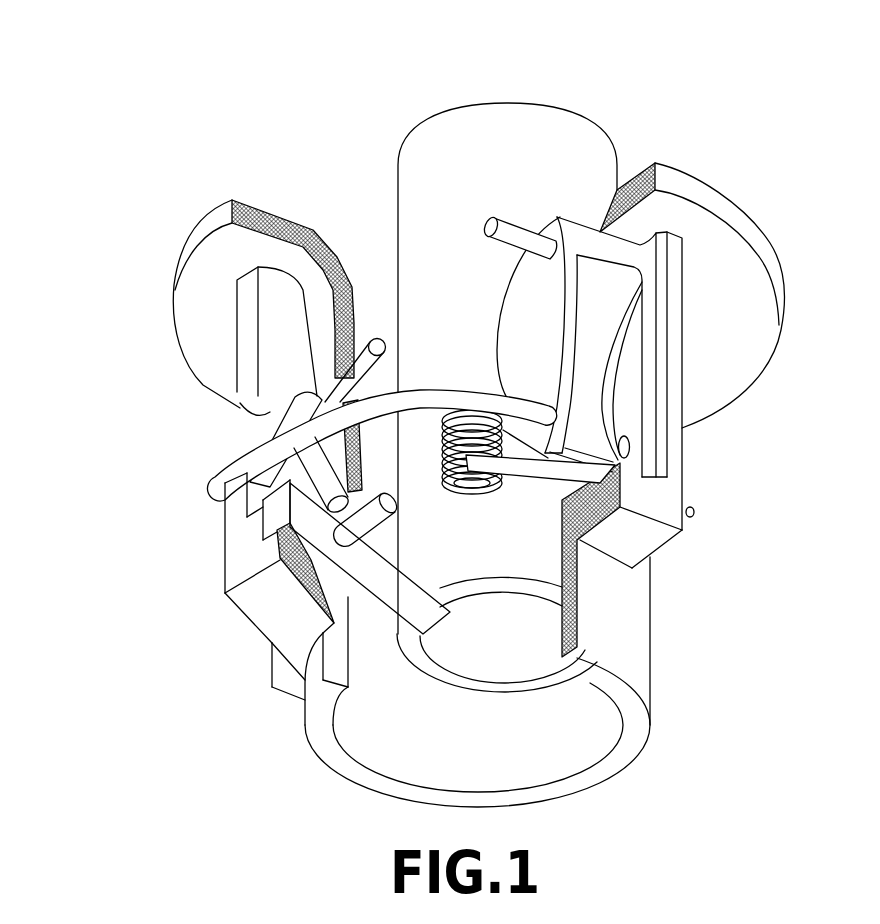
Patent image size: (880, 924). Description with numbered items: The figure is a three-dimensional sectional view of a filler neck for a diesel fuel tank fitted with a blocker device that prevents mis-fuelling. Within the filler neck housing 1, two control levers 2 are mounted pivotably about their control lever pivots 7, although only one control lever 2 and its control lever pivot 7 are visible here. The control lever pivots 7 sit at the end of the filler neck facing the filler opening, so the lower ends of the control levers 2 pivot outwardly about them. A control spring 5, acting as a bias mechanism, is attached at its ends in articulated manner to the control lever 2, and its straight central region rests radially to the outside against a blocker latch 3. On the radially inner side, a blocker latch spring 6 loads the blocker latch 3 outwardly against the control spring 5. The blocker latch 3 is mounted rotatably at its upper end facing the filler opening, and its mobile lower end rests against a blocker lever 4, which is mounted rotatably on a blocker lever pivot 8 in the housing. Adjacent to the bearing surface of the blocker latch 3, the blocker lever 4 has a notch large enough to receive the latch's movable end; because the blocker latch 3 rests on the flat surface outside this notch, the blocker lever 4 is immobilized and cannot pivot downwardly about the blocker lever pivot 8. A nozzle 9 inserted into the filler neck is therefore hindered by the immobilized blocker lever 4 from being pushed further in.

The filler neck housing 1 is at (193, 233).
The control lever 2 is at (670, 320).
The blocker latch 3 is at (210, 363).
The blocker lever 4 is at (390, 605).
The control spring 5 is at (295, 445).
The blocker latch spring 6 is at (481, 462).
The control lever pivot 7 is at (663, 153).
The blocker lever pivot 8 is at (216, 538).
The nozzle 9 is at (497, 145).